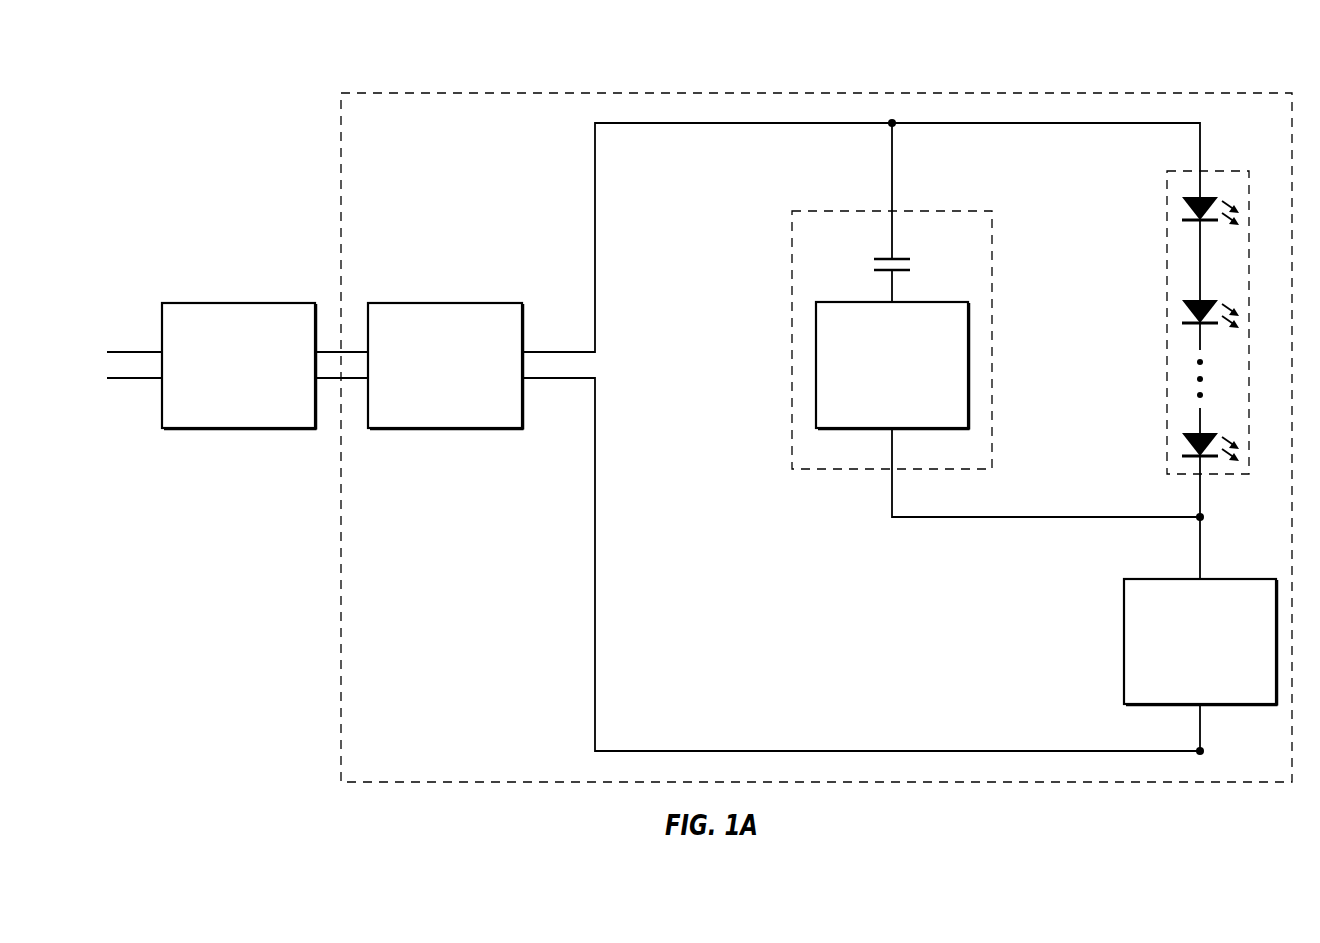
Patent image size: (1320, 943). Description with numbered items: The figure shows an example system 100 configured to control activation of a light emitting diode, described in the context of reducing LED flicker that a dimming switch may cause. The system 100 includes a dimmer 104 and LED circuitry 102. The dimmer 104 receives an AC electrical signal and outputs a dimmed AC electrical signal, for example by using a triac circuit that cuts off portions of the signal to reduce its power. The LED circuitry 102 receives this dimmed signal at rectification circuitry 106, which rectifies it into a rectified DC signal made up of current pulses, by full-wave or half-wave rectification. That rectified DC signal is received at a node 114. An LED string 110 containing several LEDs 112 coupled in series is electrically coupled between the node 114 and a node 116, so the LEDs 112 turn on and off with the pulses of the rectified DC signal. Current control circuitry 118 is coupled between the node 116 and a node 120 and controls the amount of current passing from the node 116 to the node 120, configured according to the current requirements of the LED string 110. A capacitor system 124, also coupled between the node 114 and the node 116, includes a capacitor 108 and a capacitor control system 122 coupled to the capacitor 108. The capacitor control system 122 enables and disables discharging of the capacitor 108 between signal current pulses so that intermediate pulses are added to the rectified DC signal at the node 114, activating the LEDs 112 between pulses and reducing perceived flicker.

The system 100 is at (165, 95).
The LED circuitry 102 is at (1242, 93).
The dimmer 104 is at (250, 387).
The rectification circuitry 106 is at (459, 401).
The capacitor 108 is at (876, 270).
The LED string 110 is at (1242, 171).
The LED 112 is at (1213, 313).
The node 114 is at (892, 123).
The node 116 is at (1205, 517).
The current control circuitry 118 is at (1214, 675).
The node 120 is at (1205, 753).
The capacitor control system 122 is at (906, 413).
The capacitor system 124 is at (792, 285).